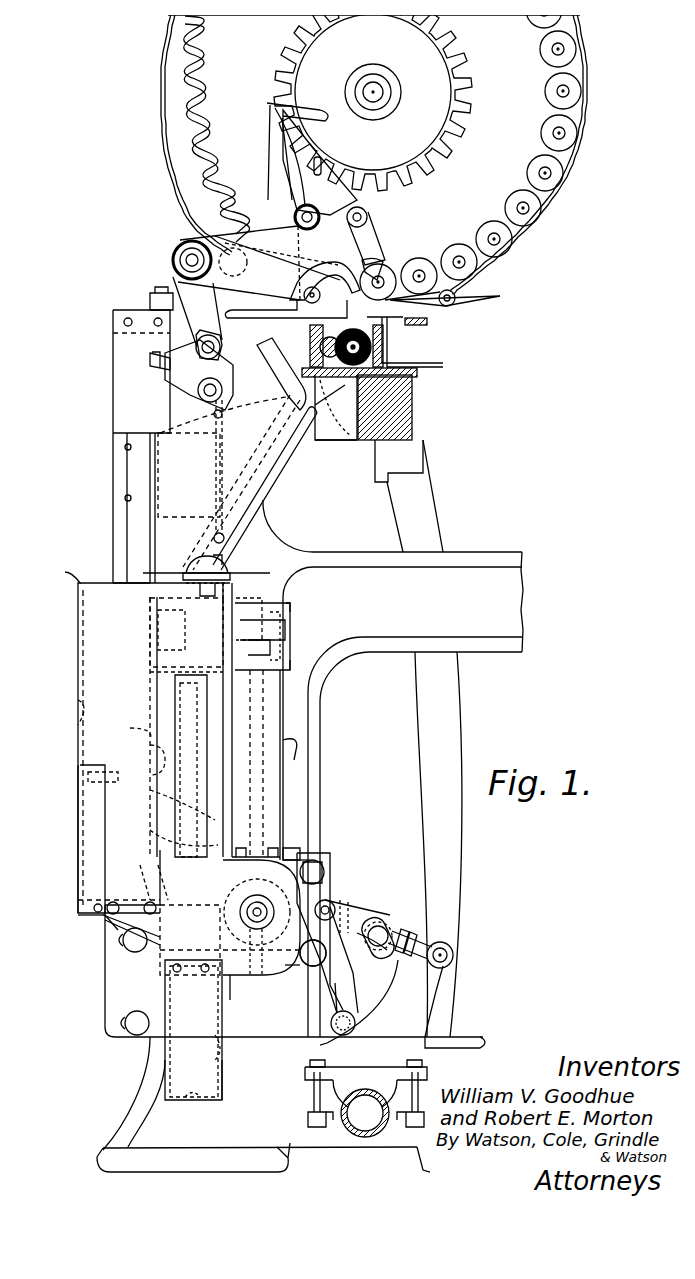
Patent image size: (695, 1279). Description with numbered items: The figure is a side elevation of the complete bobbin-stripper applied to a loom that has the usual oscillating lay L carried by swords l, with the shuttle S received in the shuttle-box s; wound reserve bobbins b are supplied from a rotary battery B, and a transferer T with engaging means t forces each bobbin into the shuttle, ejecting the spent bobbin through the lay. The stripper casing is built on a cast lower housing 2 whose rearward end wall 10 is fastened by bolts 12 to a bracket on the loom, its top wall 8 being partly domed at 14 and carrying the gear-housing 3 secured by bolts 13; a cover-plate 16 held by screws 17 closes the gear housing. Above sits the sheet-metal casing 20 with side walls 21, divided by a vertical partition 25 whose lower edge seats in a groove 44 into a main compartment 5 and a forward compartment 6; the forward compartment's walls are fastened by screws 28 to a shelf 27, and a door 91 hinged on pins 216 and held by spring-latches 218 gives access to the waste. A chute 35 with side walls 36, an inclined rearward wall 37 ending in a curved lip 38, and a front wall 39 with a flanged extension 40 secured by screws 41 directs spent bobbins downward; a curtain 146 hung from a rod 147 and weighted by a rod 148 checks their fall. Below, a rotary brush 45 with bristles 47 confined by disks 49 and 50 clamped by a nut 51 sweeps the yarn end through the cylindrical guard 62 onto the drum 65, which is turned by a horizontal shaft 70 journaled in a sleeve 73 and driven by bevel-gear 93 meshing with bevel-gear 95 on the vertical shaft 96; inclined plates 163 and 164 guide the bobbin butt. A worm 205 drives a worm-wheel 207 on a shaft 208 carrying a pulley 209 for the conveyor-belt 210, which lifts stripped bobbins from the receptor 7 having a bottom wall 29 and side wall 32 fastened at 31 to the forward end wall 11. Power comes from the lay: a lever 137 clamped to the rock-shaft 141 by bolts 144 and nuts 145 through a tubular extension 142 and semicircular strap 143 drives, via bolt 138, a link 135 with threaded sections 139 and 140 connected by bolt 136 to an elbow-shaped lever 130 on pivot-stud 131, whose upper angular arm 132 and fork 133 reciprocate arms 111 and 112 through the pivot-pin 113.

The rotary battery B is at (580, 172).
The reserve bobbin b is at (497, 252).
The transferer T is at (192, 240).
The bobbin-engaging means t is at (378, 258).
The shuttle-box s is at (395, 330).
The shuttle S is at (336, 407).
The curved lip 38 is at (332, 450).
The lay L is at (358, 437).
The swords l is at (430, 497).
The rod 147 is at (214, 414).
The screws 41 is at (125, 447).
The flanged extension 40 is at (120, 470).
The front wall 39 is at (148, 520).
The chute 35 is at (148, 545).
The curtain 146 is at (189, 475).
The rod 148 is at (206, 471).
The rotary brush 45 is at (178, 570).
The nut 51 is at (213, 560).
The concavo-convex disk 49 is at (222, 572).
The bristles 47 is at (225, 567).
The concavo-convex disk 50 is at (230, 577).
The sleeve 73 is at (262, 604).
The horizontal shaft 70 is at (253, 612).
The inclined rearward wall 37 is at (268, 487).
The side walls 36 is at (260, 505).
The bevel-gear 93 is at (285, 608).
The screws 17 is at (291, 615).
The cover-plate 16 is at (290, 625).
The bevel-gear 95 is at (280, 643).
The casing 20 is at (78, 682).
The forward compartment 6 is at (75, 706).
The drum 65 is at (160, 658).
The cylindrical guard 62 is at (148, 672).
The conveyor-belt 210 is at (175, 707).
The vertical partition 25 is at (135, 722).
The main compartment 5 is at (151, 755).
The spring-latches 218 is at (120, 772).
The vertical shaft 96 is at (262, 716).
The gear-housing 3 is at (292, 751).
The bolts 13 is at (320, 833).
The top wall 8 is at (292, 848).
The domed portion 14 is at (305, 858).
The door 91 is at (100, 825).
The side walls 21 is at (100, 865).
The inclined plate 164 is at (165, 805).
The inclined plate 163 is at (160, 840).
The groove 44 is at (148, 876).
The bracket-like shelf 27 is at (150, 905).
The pins 216 is at (97, 912).
The screws 28 is at (113, 912).
The bolts 12 is at (128, 944).
The rearward end wall 10 is at (262, 1040).
The shaft 208 is at (230, 940).
The pulley 209 is at (193, 1030).
The fastening 31 is at (180, 975).
The lower housing 2 is at (243, 980).
The forward end wall 11 is at (232, 985).
The worm-wheel 207 is at (262, 980).
The worm 205 is at (297, 978).
The side wall 32 is at (222, 1058).
The receptor 7 is at (230, 1086).
The bottom wall 29 is at (197, 1100).
The reciprocated arm 111 is at (327, 933).
The pivot-pin 113 is at (332, 902).
The reciprocated arm 112 is at (318, 944).
The fork 133 is at (352, 908).
The upper angular arm 132 is at (372, 920).
The bolt 136 is at (380, 948).
The link 135 is at (412, 938).
The screw-threaded section 139 is at (402, 930).
The screw-threaded section 140 is at (418, 940).
The bolt 138 is at (453, 954).
The elbow-shaped lever 130 is at (355, 985).
The pivot-stud 131 is at (331, 1023).
The lever 137 is at (425, 1000).
The bolts 144 is at (412, 1087).
The nuts 145 is at (308, 1120).
The rock-shaft 141 is at (350, 1140).
The tubular extension 142 is at (378, 1138).
The semicircular strap 143 is at (362, 1140).